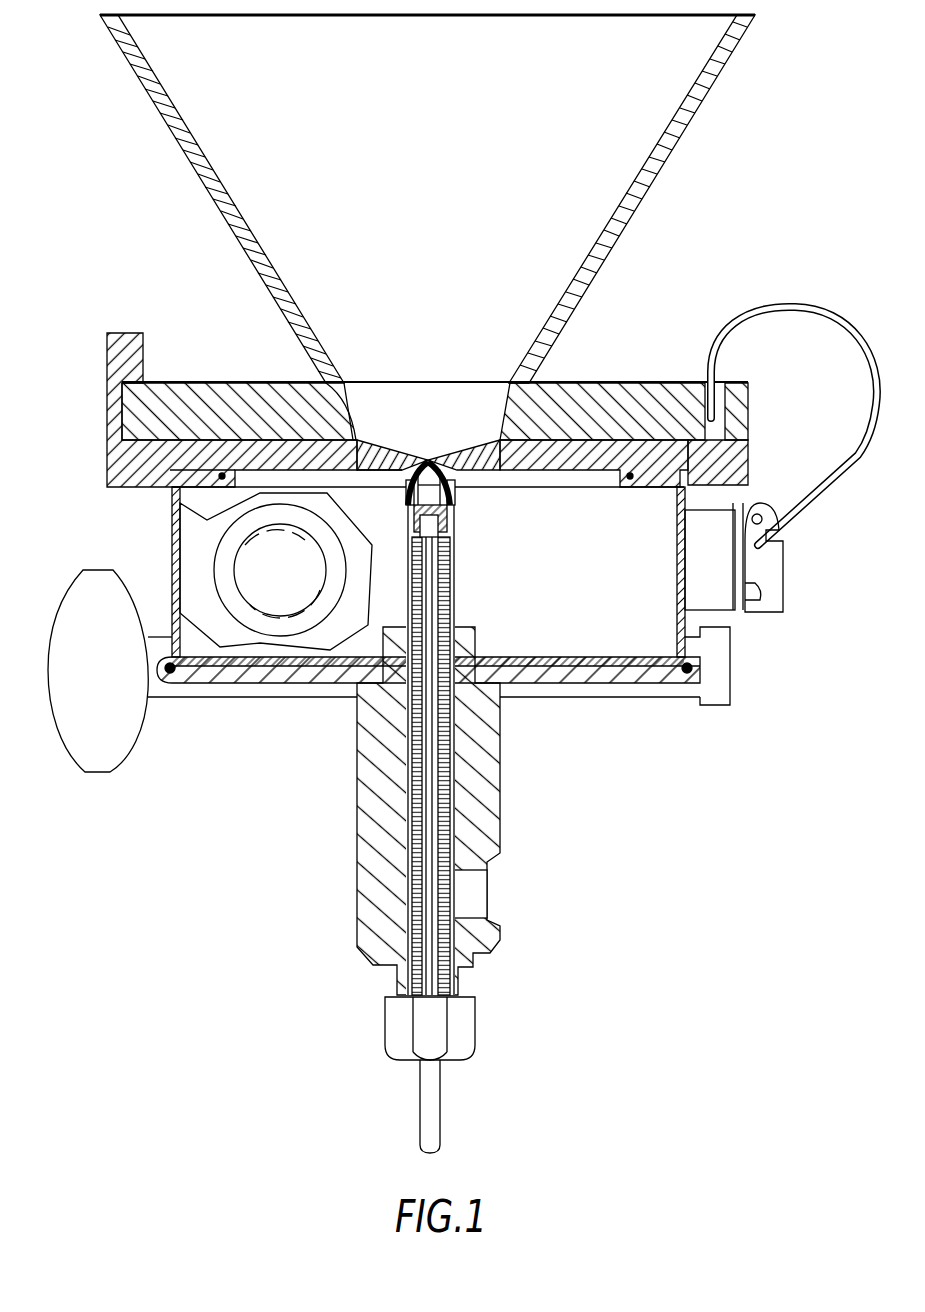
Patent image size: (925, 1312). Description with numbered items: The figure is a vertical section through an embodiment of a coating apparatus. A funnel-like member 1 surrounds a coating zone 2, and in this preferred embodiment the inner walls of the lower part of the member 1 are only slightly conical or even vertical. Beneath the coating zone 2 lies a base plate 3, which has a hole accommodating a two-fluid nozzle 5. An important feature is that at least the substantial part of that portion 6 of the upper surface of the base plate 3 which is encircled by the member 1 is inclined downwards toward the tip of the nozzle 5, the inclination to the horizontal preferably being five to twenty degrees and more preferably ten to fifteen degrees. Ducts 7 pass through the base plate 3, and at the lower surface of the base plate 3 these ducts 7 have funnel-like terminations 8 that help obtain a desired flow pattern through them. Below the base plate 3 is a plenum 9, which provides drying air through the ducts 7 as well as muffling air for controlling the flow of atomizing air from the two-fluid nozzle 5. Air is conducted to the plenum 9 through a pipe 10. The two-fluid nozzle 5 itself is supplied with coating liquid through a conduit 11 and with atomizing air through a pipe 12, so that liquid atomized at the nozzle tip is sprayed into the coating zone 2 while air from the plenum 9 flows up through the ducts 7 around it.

The funnel-like member 1 is at (603, 243).
The coating zone 2 is at (450, 430).
The base plate 3 is at (520, 463).
The two-fluid nozzle 5 is at (456, 523).
The portion of the upper surface of the base plate 6 is at (487, 452).
The ducts 7 is at (393, 424).
The funnel-like terminations 8 is at (380, 456).
The plenum 9 is at (584, 584).
The pipe 10 is at (238, 570).
The conduit 11 is at (437, 1100).
The pipe 12 is at (488, 888).